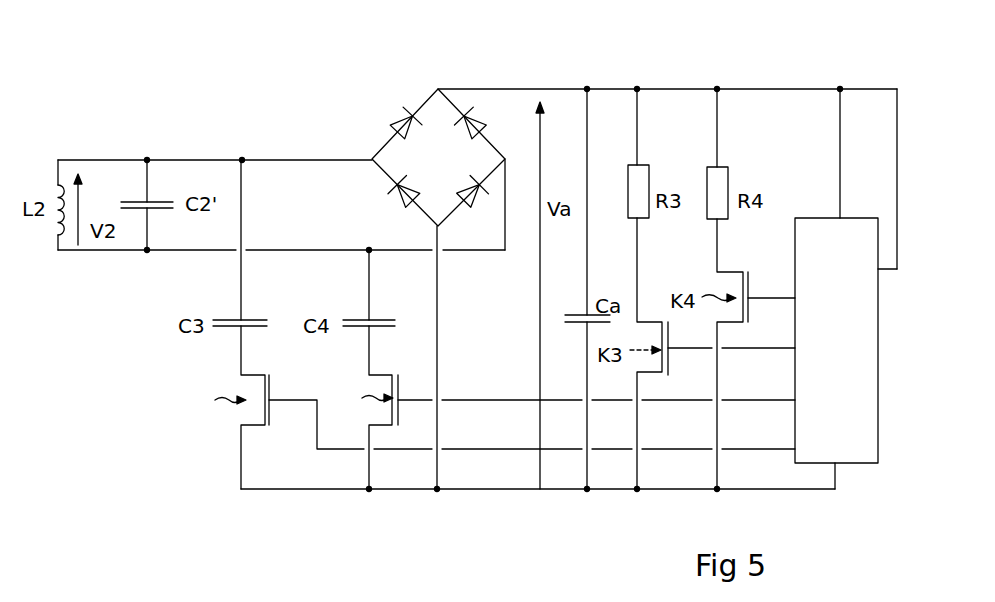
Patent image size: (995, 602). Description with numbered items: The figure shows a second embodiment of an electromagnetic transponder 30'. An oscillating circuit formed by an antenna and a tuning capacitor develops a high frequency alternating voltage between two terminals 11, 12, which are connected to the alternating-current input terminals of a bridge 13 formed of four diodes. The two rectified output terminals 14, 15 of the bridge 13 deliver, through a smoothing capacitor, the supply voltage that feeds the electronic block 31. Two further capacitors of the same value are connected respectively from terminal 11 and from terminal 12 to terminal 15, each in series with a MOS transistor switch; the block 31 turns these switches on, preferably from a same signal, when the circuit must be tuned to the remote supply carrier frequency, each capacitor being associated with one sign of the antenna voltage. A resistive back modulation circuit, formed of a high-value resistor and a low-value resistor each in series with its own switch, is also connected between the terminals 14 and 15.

The terminal of the oscillating circuit 11 is at (150, 154).
The terminal of the oscillating circuit 12 is at (148, 252).
The bridge 13 is at (449, 167).
The rectified output terminal 14 is at (553, 87).
The rectified output terminal 15 is at (405, 491).
The transponder 30' is at (435, 412).
The electronic block 31 is at (818, 217).